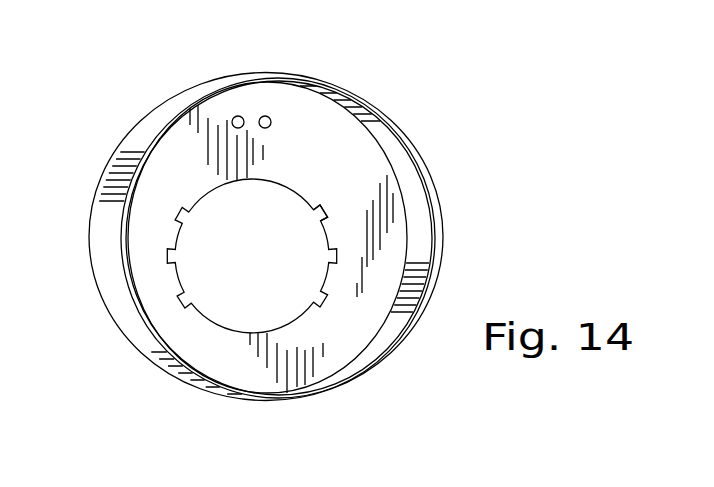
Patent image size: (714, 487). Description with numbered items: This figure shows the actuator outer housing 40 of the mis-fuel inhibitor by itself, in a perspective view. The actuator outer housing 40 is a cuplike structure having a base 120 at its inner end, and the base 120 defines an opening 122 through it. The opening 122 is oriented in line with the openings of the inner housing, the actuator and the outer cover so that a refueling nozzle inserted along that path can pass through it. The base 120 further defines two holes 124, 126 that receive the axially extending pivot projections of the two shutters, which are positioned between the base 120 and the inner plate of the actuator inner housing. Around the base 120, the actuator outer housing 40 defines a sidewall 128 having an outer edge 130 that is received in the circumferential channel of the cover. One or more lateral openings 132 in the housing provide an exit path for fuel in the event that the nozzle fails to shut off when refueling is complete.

The actuator outer housing 40 is at (98, 140).
The base 120 is at (340, 145).
The opening 122 is at (228, 250).
The hole 124 is at (263, 117).
The hole 126 is at (237, 117).
The sidewall 128 is at (424, 222).
The outer edge 130 is at (446, 278).
The lateral opening 132 is at (325, 207).